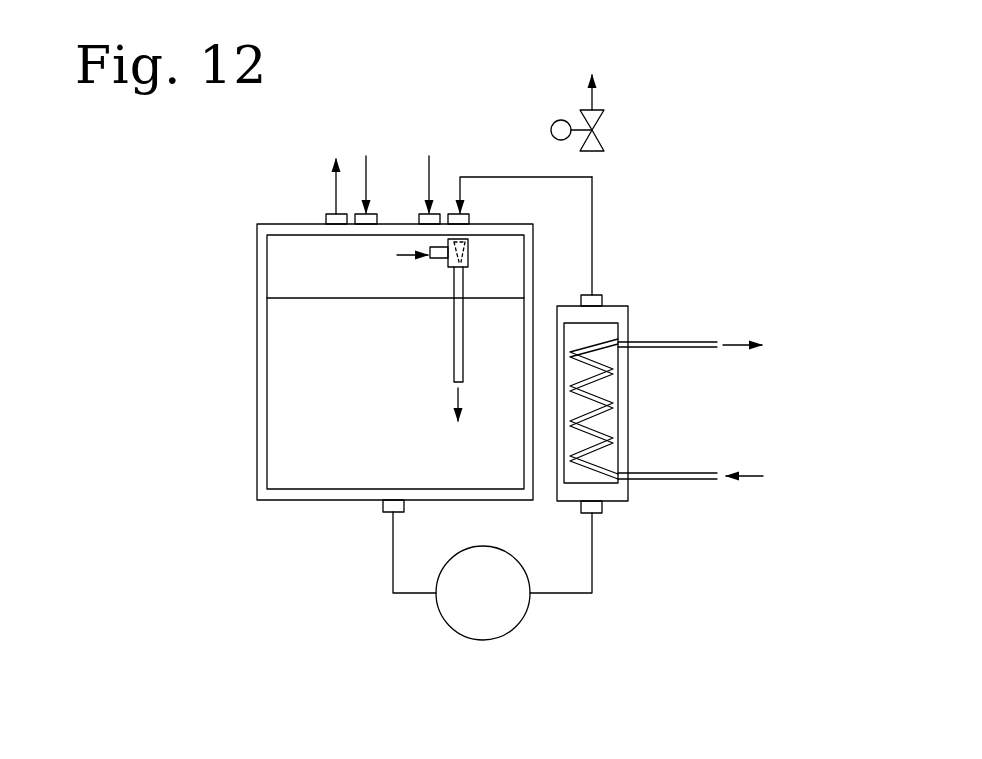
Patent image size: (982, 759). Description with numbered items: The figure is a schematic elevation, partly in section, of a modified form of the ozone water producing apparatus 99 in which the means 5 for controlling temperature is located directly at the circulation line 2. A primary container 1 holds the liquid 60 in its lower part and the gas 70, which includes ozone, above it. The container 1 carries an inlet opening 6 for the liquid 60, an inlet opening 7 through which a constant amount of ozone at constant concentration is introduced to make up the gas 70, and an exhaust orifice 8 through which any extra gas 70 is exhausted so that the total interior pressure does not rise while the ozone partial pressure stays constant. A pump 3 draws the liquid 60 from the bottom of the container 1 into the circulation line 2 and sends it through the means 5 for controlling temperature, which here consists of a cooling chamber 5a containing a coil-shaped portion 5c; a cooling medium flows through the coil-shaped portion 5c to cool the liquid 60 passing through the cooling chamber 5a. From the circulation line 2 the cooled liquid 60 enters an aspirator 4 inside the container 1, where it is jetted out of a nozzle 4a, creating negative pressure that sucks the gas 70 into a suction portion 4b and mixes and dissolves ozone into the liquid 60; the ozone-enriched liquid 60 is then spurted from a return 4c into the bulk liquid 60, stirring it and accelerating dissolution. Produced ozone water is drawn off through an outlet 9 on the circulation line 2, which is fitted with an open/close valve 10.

The apparatus 99 is at (251, 221).
The primary container 1 is at (260, 352).
The gas 70 is at (273, 272).
The liquid 60 is at (273, 455).
The exhaust orifice 8 is at (323, 213).
The inlet opening for the gas 7 is at (377, 213).
The inlet opening for the liquid 6 is at (445, 213).
The aspirator 4 is at (468, 265).
The nozzle 4a is at (477, 247).
The suction portion 4b is at (437, 260).
The return 4c is at (457, 367).
The outlet 9 is at (597, 95).
The open/close valve 10 is at (600, 137).
The means for controlling temperature 5 is at (618, 495).
The cooling chamber 5a is at (613, 387).
The coil-shaped portion 5c is at (617, 437).
The circulation line 2 is at (392, 587).
The pump 3 is at (499, 606).